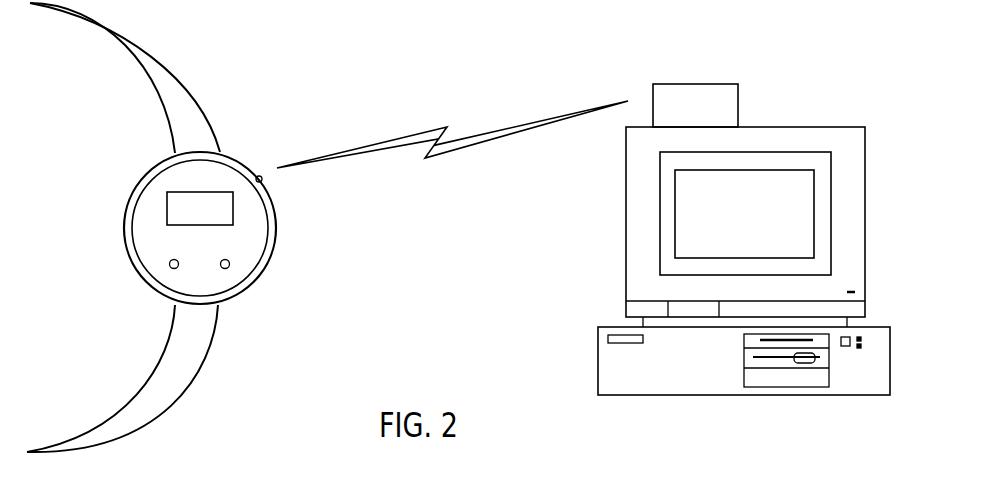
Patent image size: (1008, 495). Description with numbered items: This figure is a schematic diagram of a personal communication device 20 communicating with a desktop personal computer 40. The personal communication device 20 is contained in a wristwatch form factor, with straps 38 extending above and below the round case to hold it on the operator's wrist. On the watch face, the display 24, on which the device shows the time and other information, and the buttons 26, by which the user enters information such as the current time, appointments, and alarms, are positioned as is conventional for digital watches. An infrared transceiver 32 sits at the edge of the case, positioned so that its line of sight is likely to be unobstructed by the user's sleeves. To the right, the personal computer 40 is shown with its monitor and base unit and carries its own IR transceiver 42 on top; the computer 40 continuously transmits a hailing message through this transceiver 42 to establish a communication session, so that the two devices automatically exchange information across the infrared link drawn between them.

The personal communication device 20 is at (249, 418).
The display 24 is at (218, 225).
The buttons 26 is at (221, 268).
The infrared transceiver 32 is at (263, 182).
The strap 38 is at (205, 100).
The personal computer 40 is at (865, 172).
The IR transceiver 42 is at (735, 102).